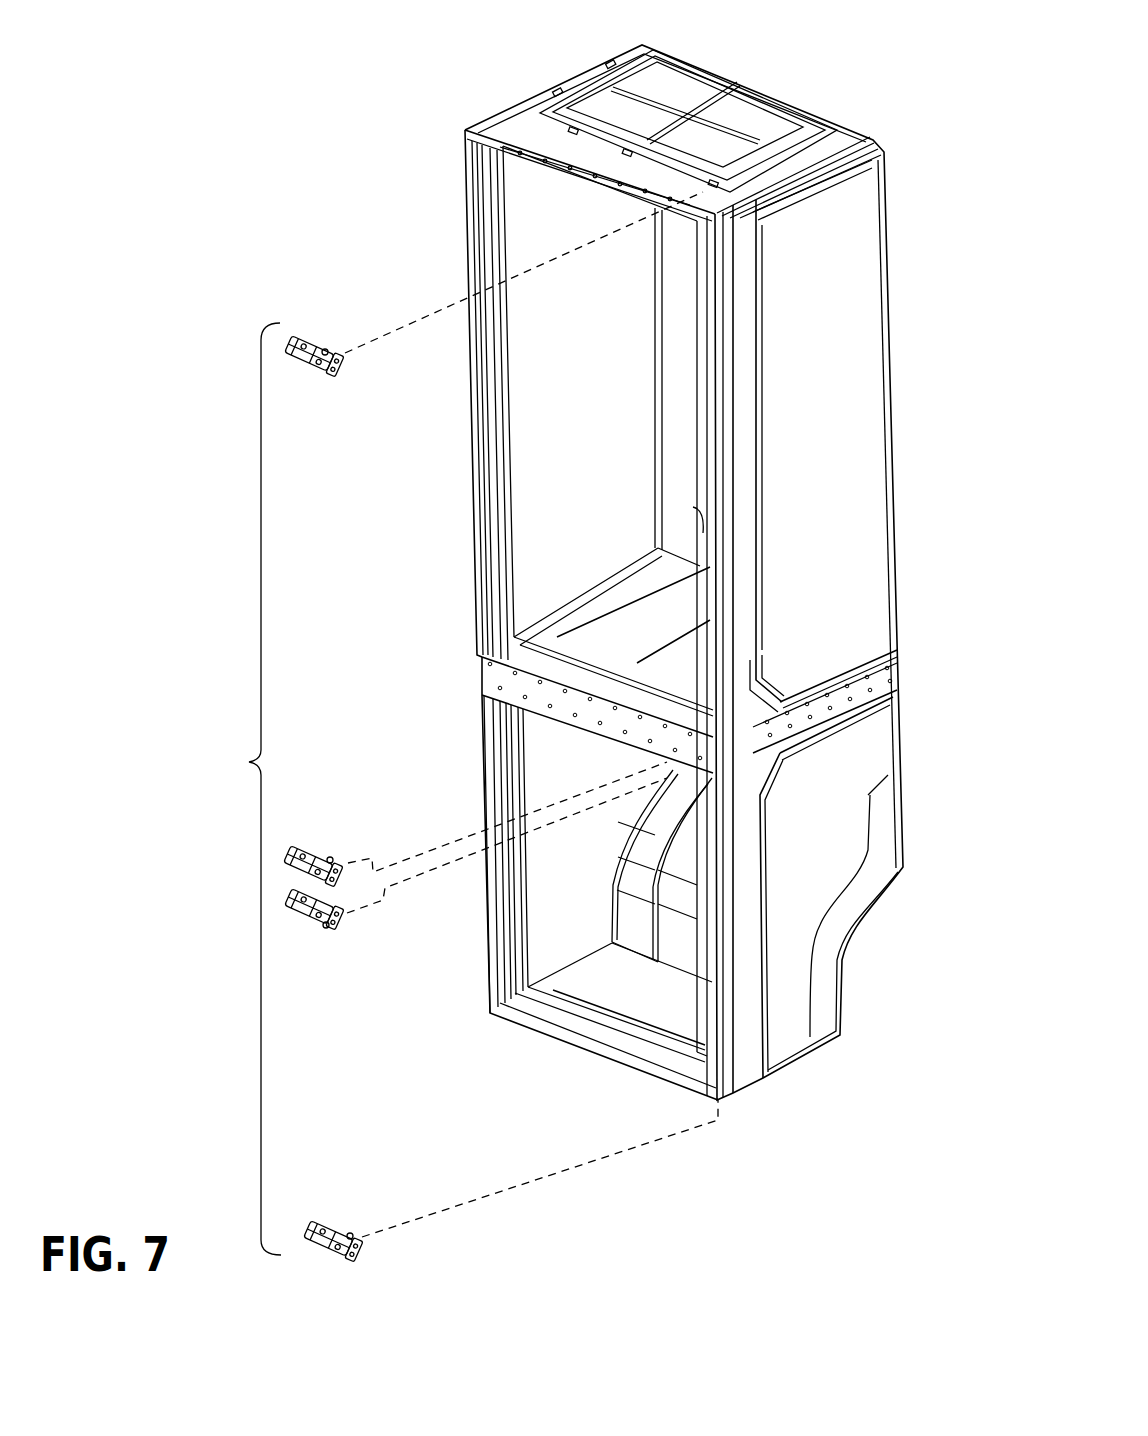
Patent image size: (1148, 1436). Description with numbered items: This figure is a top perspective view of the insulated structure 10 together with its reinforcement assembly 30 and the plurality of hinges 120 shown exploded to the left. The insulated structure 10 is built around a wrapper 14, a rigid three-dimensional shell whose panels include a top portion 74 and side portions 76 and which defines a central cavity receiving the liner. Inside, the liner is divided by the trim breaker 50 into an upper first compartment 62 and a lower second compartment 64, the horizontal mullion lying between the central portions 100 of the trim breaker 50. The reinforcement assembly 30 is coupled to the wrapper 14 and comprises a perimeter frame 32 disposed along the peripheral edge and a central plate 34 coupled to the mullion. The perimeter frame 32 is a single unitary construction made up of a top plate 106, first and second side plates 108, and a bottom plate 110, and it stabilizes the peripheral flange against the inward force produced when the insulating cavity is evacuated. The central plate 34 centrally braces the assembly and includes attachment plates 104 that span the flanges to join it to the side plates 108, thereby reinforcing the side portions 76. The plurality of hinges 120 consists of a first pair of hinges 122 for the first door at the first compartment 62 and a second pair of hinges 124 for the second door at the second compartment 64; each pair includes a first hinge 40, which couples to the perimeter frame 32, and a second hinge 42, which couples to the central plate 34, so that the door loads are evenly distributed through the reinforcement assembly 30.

The insulated structure 10 is at (903, 120).
The wrapper 14 is at (823, 222).
The reinforcement assembly 30 is at (673, 190).
The perimeter frame 32 is at (565, 152).
The central plate 34 is at (607, 720).
The first hinge 40 is at (300, 340).
The second hinge 42 is at (302, 848).
The trim breaker 50 is at (710, 403).
The first compartment 62 is at (555, 407).
The second compartment 64 is at (613, 940).
The top portion 74 is at (632, 140).
The side portions 76 is at (847, 492).
The central portions 100 is at (530, 667).
The attachment plates 104 is at (730, 760).
The top plate 106 is at (522, 128).
The side plates 108 is at (733, 307).
The bottom plate 110 is at (568, 1045).
The plurality of hinges 120 is at (238, 789).
The first pair of hinges 122 is at (322, 855).
The second pair of hinges 124 is at (323, 350).